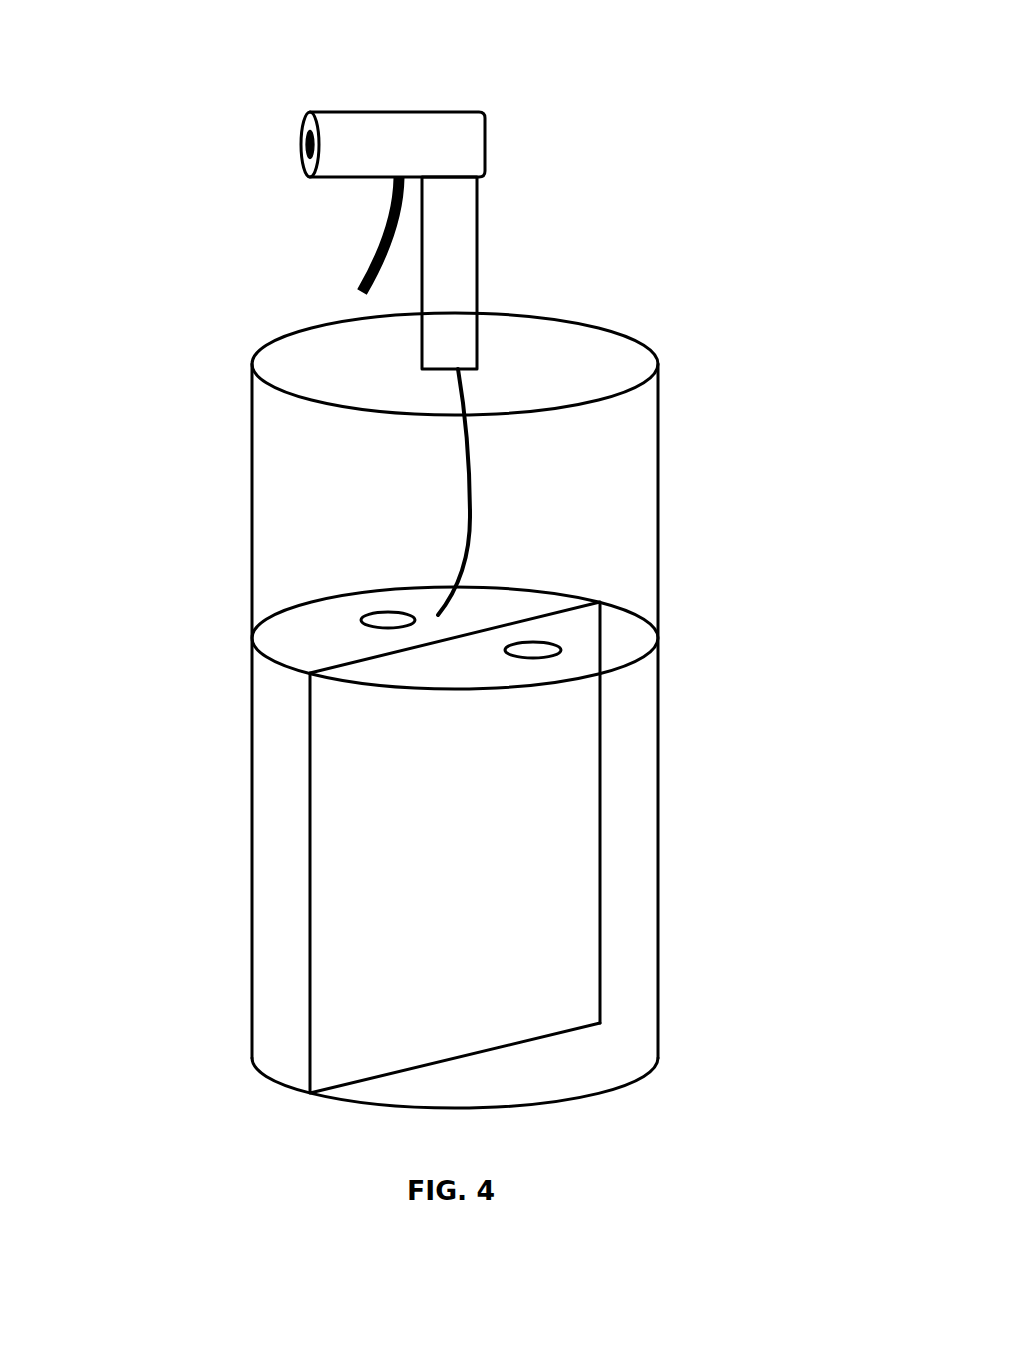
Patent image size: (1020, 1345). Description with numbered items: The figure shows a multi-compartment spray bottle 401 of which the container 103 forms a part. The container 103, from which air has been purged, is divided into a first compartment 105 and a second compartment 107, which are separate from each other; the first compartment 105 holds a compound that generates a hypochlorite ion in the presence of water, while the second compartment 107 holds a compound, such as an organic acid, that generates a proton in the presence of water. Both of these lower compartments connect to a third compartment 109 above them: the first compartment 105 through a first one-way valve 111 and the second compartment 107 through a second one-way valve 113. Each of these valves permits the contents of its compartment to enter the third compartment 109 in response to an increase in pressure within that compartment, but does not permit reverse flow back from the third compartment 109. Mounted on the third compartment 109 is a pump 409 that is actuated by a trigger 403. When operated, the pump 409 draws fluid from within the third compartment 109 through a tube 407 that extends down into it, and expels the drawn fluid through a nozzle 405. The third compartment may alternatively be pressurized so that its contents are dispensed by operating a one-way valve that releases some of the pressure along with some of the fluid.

The spray bottle 401 is at (153, 48).
The trigger 403 is at (382, 243).
The nozzle 405 is at (303, 132).
The tube 407 is at (470, 440).
The pump 409 is at (553, 196).
The container 103 is at (180, 313).
The first compartment 105 is at (272, 927).
The second compartment 107 is at (625, 979).
The third compartment 109 is at (522, 502).
The first one-way valve 111 is at (395, 615).
The second one-way valve 113 is at (537, 650).